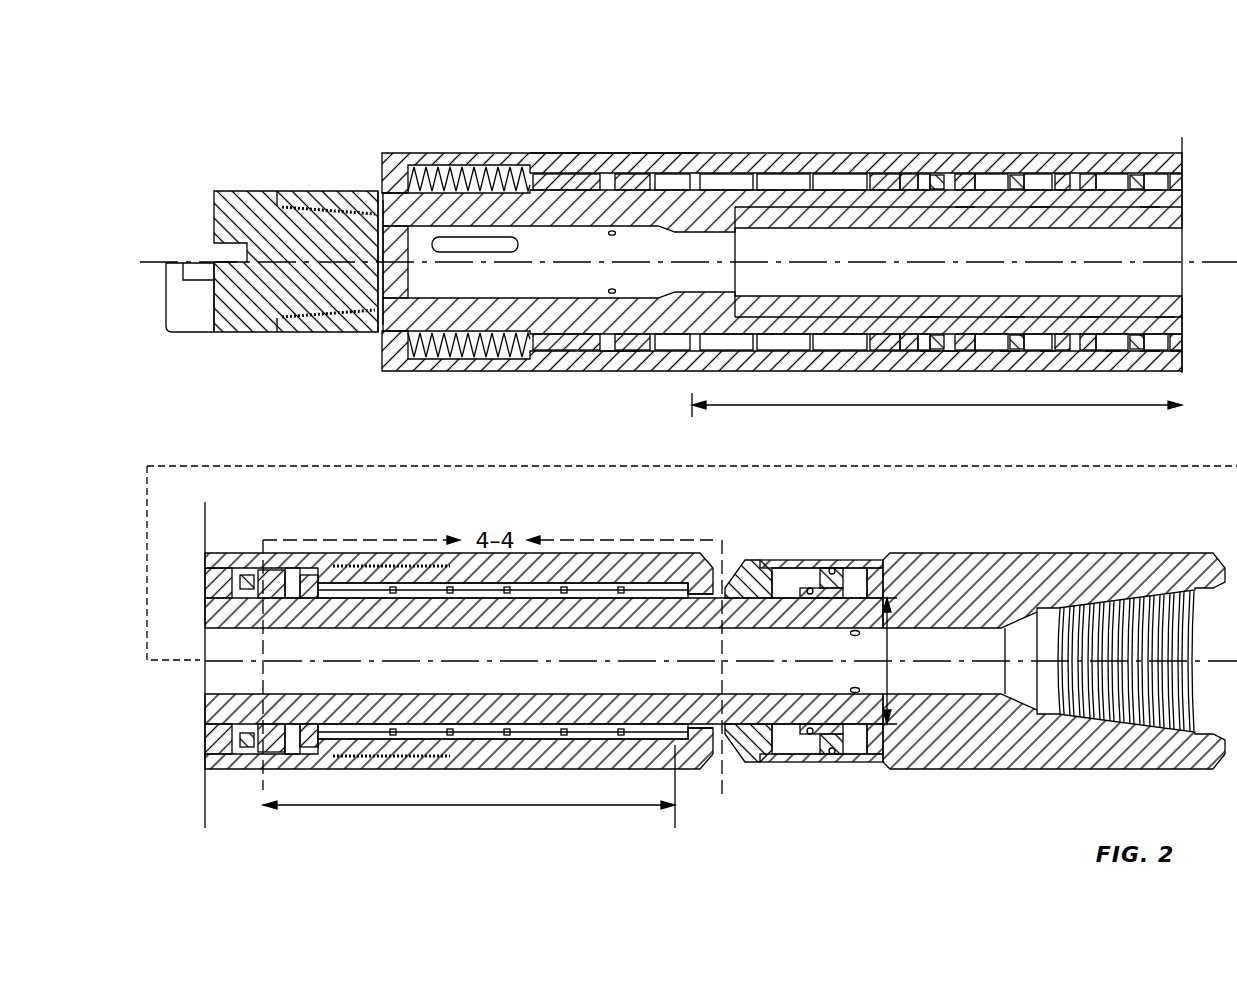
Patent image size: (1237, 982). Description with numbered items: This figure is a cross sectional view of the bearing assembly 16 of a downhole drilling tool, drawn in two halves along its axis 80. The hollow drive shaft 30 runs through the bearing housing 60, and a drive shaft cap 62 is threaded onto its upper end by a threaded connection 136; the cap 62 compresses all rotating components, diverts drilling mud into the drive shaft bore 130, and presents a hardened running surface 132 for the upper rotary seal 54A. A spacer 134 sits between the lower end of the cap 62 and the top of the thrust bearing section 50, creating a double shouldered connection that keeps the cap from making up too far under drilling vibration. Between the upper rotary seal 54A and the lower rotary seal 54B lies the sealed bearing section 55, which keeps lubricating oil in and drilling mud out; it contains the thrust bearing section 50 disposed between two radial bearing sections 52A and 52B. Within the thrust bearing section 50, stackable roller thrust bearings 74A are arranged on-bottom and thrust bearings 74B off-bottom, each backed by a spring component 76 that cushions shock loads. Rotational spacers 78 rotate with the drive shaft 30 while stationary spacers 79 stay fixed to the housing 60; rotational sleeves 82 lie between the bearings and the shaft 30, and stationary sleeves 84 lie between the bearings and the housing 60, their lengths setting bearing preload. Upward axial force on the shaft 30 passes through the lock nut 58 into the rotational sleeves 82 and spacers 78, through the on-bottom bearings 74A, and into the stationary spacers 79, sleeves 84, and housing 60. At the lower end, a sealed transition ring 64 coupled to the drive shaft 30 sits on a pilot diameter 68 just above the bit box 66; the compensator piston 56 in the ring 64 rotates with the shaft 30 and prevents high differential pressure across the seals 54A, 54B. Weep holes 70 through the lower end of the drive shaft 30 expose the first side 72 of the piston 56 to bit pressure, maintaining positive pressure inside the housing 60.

The bearing assembly 16 is at (221, 136).
The drive shaft 30 is at (798, 176).
The thrust bearing section 50 is at (1128, 84).
The radial bearing section 52A is at (769, 142).
The radial bearing section 52B is at (470, 520).
The upper rotary seal 54A is at (662, 176).
The lower rotary seal 54B is at (693, 767).
The sealed bearing section 55 is at (842, 406).
The compensator piston 56 is at (813, 567).
The lock nut 58 is at (333, 590).
The housing 60 is at (550, 160).
The drive shaft cap 62 is at (420, 175).
The transition ring 64 is at (735, 570).
The bit box 66 is at (1193, 560).
The pilot diameter 68 is at (887, 667).
The weep holes 70 is at (851, 634).
The first side 72 is at (832, 566).
The thrust bearing 74A is at (938, 180).
The thrust bearing 74B is at (1060, 178).
The spring component 76 is at (950, 343).
The rotational spacer 78 is at (965, 206).
The stationary spacer 79 is at (908, 178).
The axis 80 is at (560, 657).
The rotational sleeve 82 is at (929, 315).
The stationary sleeve 84 is at (930, 350).
The drive shaft bore 130 is at (823, 275).
The running surface 132 is at (622, 352).
The spacer 134 is at (880, 178).
The threaded connection 136 is at (875, 198).